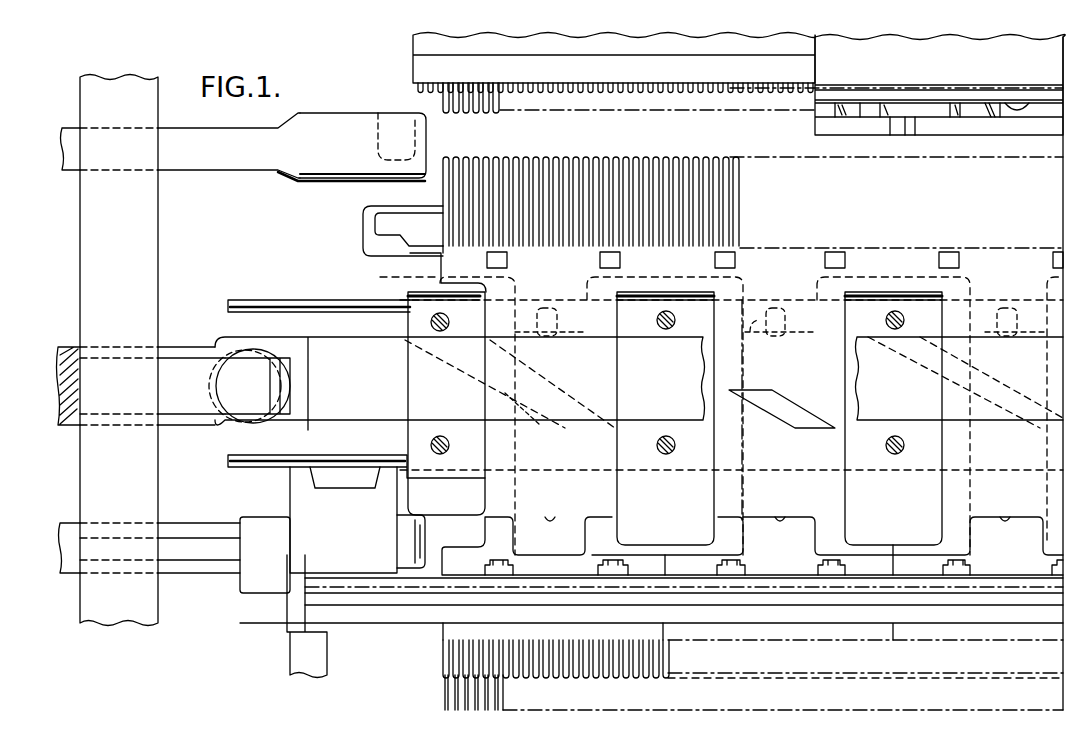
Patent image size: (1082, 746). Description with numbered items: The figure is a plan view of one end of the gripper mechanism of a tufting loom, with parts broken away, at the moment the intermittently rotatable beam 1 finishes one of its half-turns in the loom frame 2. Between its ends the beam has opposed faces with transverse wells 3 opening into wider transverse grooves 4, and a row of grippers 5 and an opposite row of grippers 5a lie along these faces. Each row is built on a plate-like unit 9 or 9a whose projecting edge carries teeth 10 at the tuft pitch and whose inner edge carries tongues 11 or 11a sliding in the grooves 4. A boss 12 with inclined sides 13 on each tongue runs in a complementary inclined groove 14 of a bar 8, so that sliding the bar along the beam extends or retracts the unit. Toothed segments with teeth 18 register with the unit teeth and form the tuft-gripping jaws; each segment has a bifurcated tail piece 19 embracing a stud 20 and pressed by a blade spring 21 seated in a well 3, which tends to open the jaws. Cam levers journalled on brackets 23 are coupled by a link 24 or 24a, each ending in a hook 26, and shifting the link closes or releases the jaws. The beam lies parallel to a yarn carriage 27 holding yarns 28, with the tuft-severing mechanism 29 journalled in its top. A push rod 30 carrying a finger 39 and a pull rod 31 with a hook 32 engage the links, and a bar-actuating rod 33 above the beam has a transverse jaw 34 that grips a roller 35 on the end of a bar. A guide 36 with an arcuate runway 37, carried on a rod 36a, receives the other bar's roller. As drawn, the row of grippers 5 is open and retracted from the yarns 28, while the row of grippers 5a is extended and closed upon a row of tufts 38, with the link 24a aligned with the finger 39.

The intermittently rotatable beam 1 is at (280, 312).
The frame 2 is at (150, 280).
The transverse wells 3 is at (744, 463).
The transverse grooves 4 is at (845, 508).
The row of grippers 5 is at (664, 130).
The row of grippers 5a is at (812, 712).
The bar 8 is at (343, 337).
The plate-like unit 9 is at (425, 272).
The plate-like unit 9a is at (462, 540).
The teeth 10 is at (568, 160).
The tongues 11 is at (582, 512).
The tongues 11a is at (488, 507).
The boss 12 is at (568, 405).
The inclined sides 13 is at (784, 396).
The grooves 14 is at (462, 375).
The teeth 18 is at (612, 672).
The tail piece 19 is at (735, 282).
The stud 20 is at (782, 330).
The blade spring 21 is at (585, 370).
The bracket 23 is at (600, 262).
The link 24 is at (400, 216).
The link 24a is at (362, 612).
The hook 26 is at (365, 235).
The yarn carriage 27 is at (742, 78).
The yarns 28 is at (495, 127).
The tuft-severing mechanism 29 is at (897, 373).
The push rod 30 is at (178, 575).
The pull rod 31 is at (232, 170).
The hook 32 is at (380, 112).
The bar-actuating rod 33 is at (180, 412).
The transverse jaw 34 is at (224, 340).
The roller 35 is at (235, 430).
The guide 36 is at (300, 500).
The rod 36a is at (190, 523).
The arcuate runway 37 is at (325, 477).
The row of tufts 38 is at (445, 700).
The finger 39 is at (290, 600).